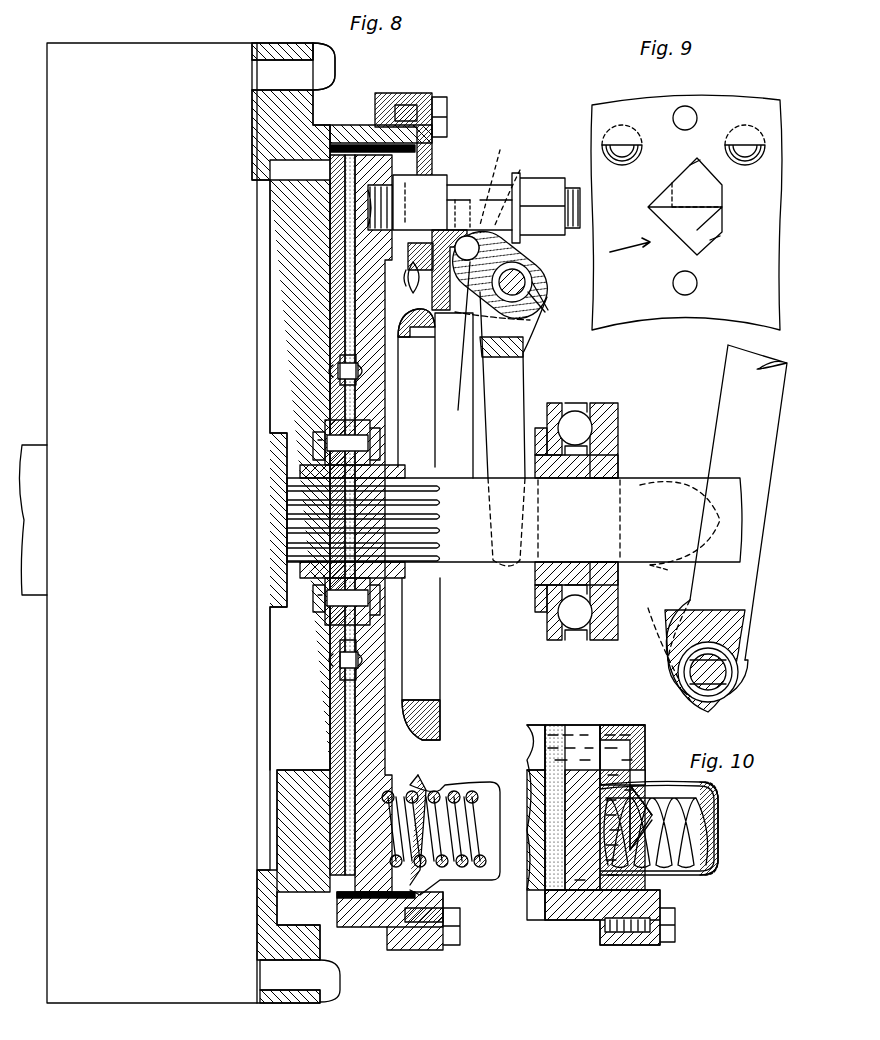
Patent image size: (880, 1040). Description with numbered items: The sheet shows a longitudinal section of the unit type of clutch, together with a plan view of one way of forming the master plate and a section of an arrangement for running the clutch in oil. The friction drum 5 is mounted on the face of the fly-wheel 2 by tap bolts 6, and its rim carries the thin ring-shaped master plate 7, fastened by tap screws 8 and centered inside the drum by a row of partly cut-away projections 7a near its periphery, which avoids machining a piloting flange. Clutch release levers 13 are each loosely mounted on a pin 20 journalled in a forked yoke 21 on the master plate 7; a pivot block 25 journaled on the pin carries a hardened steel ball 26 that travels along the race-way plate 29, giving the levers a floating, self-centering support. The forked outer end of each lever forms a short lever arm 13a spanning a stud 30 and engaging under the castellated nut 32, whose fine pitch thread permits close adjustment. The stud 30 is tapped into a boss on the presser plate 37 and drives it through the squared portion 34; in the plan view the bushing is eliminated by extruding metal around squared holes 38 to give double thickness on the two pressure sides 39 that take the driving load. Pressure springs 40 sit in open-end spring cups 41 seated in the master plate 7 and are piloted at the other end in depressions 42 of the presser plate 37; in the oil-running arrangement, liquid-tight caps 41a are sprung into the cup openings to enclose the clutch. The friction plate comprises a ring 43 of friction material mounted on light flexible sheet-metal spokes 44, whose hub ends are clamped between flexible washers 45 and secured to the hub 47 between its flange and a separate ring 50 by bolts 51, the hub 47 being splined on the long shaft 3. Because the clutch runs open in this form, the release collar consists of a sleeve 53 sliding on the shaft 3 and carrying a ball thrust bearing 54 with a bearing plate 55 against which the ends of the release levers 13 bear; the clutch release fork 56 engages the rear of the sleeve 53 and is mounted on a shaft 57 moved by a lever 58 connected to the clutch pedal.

In FIG. 8, the fly-wheel 2 is at (190, 45).
In FIG. 8, the shaft 3 is at (486, 568).
In FIG. 8, the friction drum 5 is at (333, 123).
In FIG. 10, the friction drum 5 is at (615, 948).
In FIG. 8, the tap bolts 6 is at (278, 60).
In FIG. 8, the master plate 7 is at (420, 100).
In FIG. 9, the master plate 7 is at (605, 285).
In FIG. 10, the master plate 7 is at (660, 898).
In FIG. 8, the projections 7a is at (414, 148).
In FIG. 9, the projections 7a is at (622, 160).
In FIG. 8, the tap screws 8 is at (448, 112).
In FIG. 10, the tap screws 8 is at (676, 932).
In FIG. 8, the clutch release levers 13 is at (520, 365).
In FIG. 8, the short lever arm 13a is at (524, 150).
In FIG. 8, the pin 20 is at (528, 272).
In FIG. 8, the forked yoke 21 is at (452, 310).
In FIG. 8, the pivot block 25 is at (460, 336).
In FIG. 8, the ball 26 is at (452, 260).
In FIG. 8, the race-way plate 29 is at (466, 236).
In FIG. 8, the stud 30 is at (480, 225).
In FIG. 8, the castellated nut 32 is at (533, 180).
In FIG. 8, the squared portion 34 is at (432, 186).
In FIG. 8, the presser plate 37 is at (385, 775).
In FIG. 10, the presser plate 37 is at (585, 895).
In FIG. 9, the squared holes 38 is at (650, 210).
In FIG. 8, the pressure sides 39 is at (401, 277).
In FIG. 9, the pressure sides 39 is at (692, 163).
In FIG. 8, the pressure springs 40 is at (478, 826).
In FIG. 10, the pressure springs 40 is at (690, 836).
In FIG. 8, the spring cups 41 is at (472, 786).
In FIG. 10, the spring cups 41 is at (705, 878).
In FIG. 10, the liquid-tight caps 41a is at (722, 815).
In FIG. 8, the depressions 42 is at (377, 887).
In FIG. 8, the ring 43 is at (330, 185).
In FIG. 10, the ring 43 is at (535, 900).
In FIG. 8, the spokes 44 is at (345, 297).
In FIG. 10, the spokes 44 is at (545, 752).
In FIG. 8, the flexible washers 45 is at (360, 370).
In FIG. 8, the hub 47 is at (400, 470).
In FIG. 8, the ring 50 is at (372, 430).
In FIG. 8, the bolts 51 is at (316, 438).
In FIG. 8, the sleeve 53 is at (616, 405).
In FIG. 8, the ball thrust bearing 54 is at (580, 410).
In FIG. 8, the bearing plate 55 is at (550, 402).
In FIG. 8, the clutch release fork 56 is at (655, 600).
In FIG. 8, the shaft 57 is at (690, 676).
In FIG. 8, the lever 58 is at (722, 433).